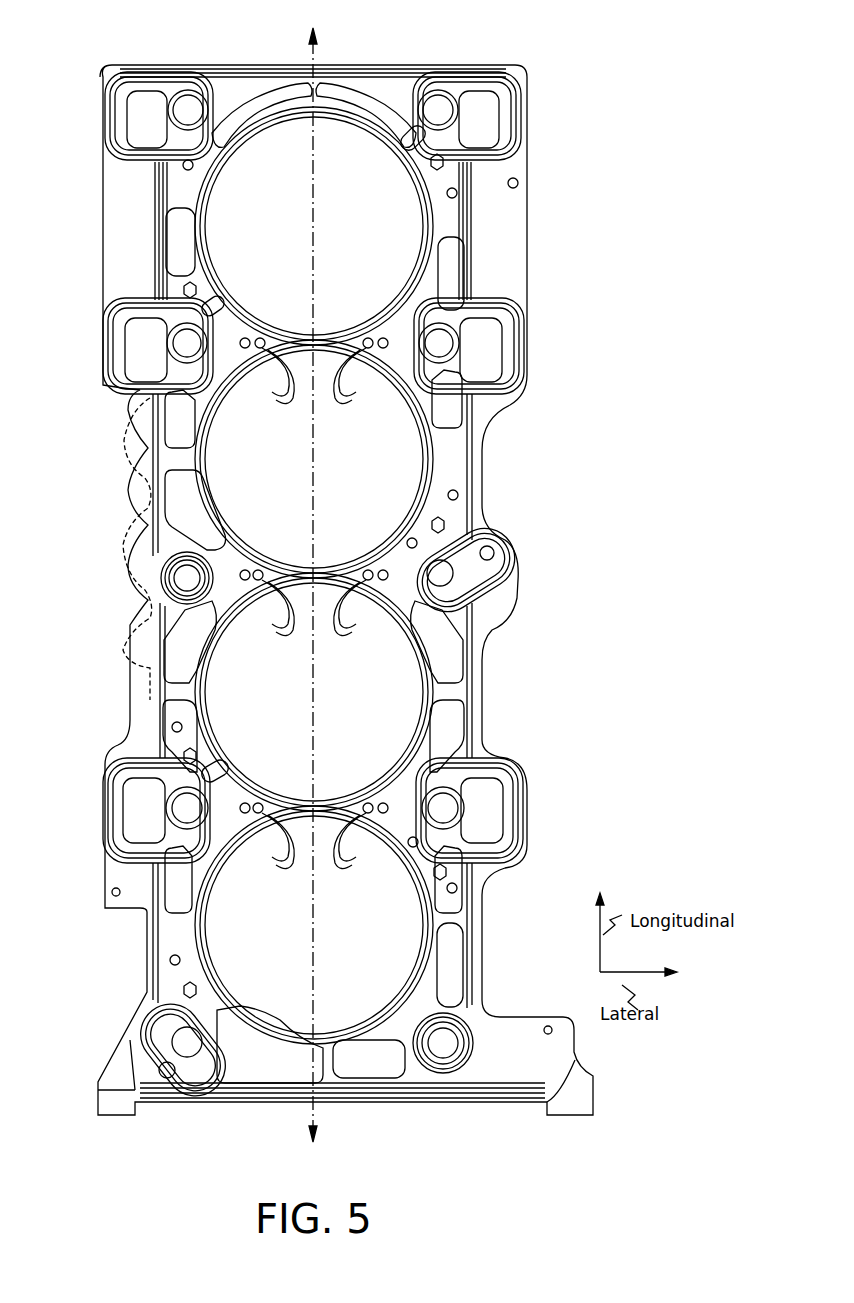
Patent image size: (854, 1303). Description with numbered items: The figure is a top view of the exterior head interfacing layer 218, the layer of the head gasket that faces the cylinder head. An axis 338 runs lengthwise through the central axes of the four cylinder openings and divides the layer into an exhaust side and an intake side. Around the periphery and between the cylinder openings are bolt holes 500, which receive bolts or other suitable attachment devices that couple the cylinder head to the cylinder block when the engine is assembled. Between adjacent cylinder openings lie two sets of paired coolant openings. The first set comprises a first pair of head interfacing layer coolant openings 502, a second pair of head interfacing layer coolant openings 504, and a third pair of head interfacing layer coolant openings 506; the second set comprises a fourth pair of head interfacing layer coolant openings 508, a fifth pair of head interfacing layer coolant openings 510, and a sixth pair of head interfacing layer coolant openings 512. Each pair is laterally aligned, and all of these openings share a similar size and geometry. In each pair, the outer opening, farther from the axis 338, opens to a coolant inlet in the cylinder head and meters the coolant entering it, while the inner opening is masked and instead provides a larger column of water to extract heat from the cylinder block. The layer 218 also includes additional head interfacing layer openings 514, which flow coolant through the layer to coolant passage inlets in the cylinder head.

The exterior head interfacing layer 218 is at (602, 68).
The axis 338 is at (320, 1125).
The bolt holes 500 is at (188, 110).
The first pair of head interfacing layer coolant openings 502 is at (350, 832).
The second pair of head interfacing layer coolant openings 504 is at (350, 600).
The third pair of head interfacing layer coolant openings 506 is at (355, 372).
The fourth pair of head interfacing layer coolant openings 508 is at (280, 832).
The fifth pair of head interfacing layer coolant openings 510 is at (275, 600).
The sixth pair of head interfacing layer coolant openings 512 is at (270, 372).
The additional head interfacing layer openings 514 is at (352, 95).